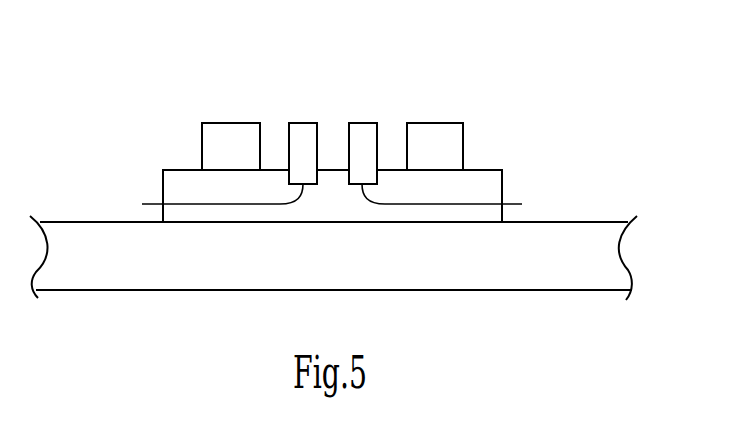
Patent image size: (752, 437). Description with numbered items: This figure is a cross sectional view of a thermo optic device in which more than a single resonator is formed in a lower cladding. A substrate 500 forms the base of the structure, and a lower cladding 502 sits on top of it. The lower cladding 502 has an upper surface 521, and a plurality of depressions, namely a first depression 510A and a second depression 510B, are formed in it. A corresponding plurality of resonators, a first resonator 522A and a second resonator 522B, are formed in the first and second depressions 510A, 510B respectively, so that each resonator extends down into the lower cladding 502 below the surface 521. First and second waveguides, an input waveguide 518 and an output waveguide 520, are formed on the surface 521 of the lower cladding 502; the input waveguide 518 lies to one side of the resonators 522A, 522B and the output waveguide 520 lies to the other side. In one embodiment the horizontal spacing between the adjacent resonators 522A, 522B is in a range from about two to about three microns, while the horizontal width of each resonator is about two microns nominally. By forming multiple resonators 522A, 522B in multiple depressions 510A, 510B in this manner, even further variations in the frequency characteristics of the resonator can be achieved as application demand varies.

The substrate 500 is at (587, 230).
The lower cladding 502 is at (485, 183).
The surface of the lower cladding 521 is at (493, 170).
The first depression 510A is at (200, 201).
The second depression 510B is at (467, 201).
The input waveguide 518 is at (226, 129).
The output waveguide 520 is at (430, 130).
The first resonator 522A is at (302, 130).
The second resonator 522B is at (360, 130).